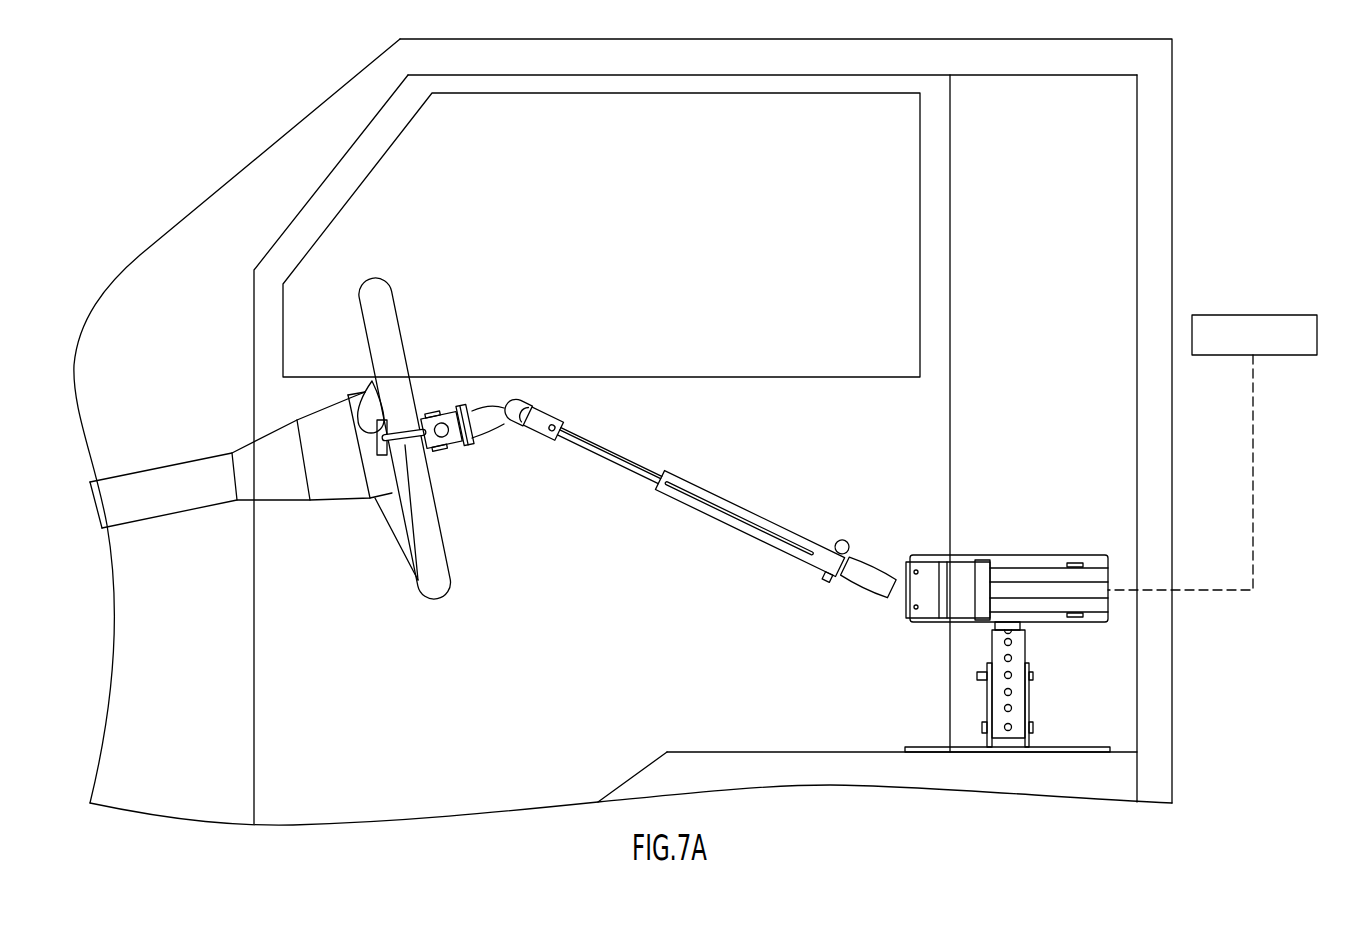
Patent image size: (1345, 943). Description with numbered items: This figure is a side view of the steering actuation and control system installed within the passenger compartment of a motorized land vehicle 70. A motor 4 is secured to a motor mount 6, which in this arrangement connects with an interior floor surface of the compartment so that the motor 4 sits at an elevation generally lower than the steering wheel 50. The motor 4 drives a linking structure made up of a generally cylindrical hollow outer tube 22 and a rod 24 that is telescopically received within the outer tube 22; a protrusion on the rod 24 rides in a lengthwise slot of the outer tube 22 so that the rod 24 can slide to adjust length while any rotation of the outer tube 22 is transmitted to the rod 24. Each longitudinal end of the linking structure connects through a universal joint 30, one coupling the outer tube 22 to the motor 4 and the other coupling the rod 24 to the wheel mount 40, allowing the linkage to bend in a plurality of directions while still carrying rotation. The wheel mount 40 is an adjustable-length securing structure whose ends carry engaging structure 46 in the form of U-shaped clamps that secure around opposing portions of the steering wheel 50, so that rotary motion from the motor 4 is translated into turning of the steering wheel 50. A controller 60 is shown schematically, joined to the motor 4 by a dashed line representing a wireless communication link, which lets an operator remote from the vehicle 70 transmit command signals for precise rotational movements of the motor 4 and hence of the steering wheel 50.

The mobile vehicle 70 is at (805, 39).
The steering wheel 50 is at (400, 330).
The engaging structure 46 is at (407, 453).
The wheel mount 40 is at (458, 462).
The universal joint 30 is at (538, 412).
The rod 24 is at (610, 448).
The outer tube 22 is at (733, 502).
The motor 4 is at (1035, 556).
The motor mount 6 is at (1050, 700).
The controller 60 is at (1253, 315).